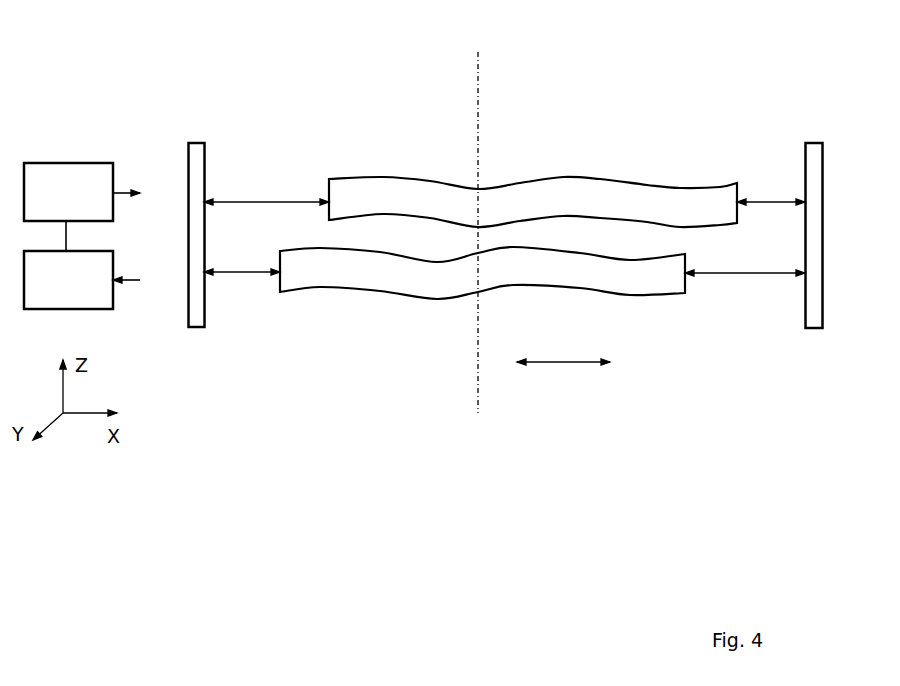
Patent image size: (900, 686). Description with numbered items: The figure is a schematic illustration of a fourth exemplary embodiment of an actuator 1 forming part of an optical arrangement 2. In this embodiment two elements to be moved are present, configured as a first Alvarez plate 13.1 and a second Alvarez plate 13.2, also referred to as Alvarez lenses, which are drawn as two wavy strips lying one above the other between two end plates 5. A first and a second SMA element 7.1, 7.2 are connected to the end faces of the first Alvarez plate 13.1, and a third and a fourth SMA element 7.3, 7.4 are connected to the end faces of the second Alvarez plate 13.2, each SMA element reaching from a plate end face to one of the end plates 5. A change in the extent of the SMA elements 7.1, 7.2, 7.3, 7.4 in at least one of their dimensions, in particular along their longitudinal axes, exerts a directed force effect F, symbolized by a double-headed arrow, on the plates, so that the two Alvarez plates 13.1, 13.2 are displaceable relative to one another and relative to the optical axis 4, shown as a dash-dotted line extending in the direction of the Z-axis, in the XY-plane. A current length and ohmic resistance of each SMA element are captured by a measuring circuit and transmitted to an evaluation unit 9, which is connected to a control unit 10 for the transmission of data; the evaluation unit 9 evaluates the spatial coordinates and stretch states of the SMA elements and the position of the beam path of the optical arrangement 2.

The actuator 1 is at (252, 88).
The optical arrangement 2 is at (190, 60).
The optical axis 4 is at (479, 132).
The end plate 5 is at (187, 159).
The first SMA element 7.1 is at (292, 199).
The second SMA element 7.2 is at (776, 200).
The third SMA element 7.3 is at (738, 278).
The fourth SMA element 7.4 is at (230, 275).
The evaluation unit 9 is at (72, 290).
The control unit 10 is at (81, 203).
The first Alvarez plate 13.1 is at (460, 188).
The second Alvarez plate 13.2 is at (435, 300).
The directed force effect F is at (563, 364).